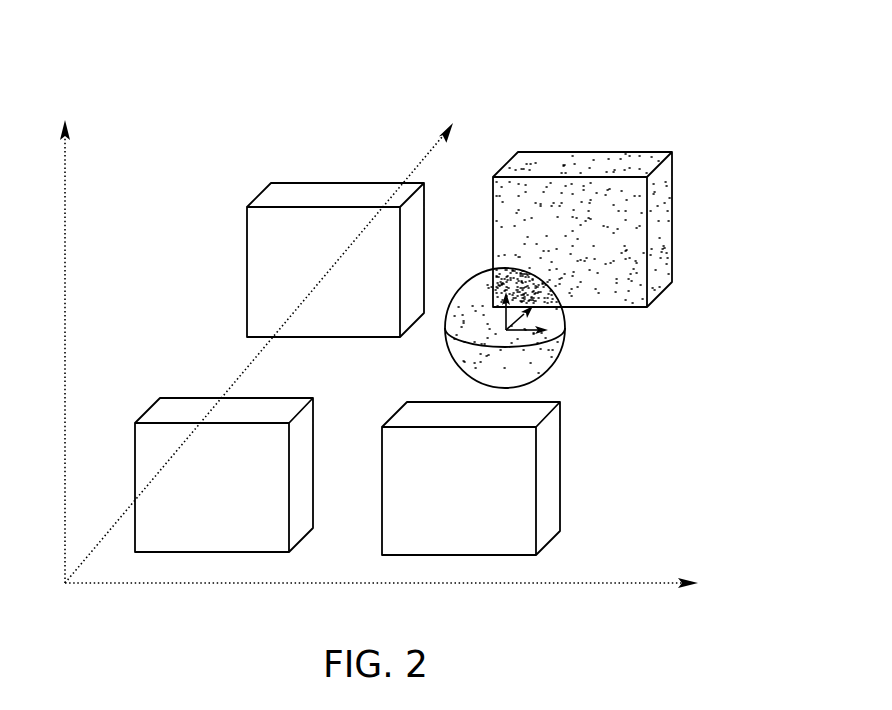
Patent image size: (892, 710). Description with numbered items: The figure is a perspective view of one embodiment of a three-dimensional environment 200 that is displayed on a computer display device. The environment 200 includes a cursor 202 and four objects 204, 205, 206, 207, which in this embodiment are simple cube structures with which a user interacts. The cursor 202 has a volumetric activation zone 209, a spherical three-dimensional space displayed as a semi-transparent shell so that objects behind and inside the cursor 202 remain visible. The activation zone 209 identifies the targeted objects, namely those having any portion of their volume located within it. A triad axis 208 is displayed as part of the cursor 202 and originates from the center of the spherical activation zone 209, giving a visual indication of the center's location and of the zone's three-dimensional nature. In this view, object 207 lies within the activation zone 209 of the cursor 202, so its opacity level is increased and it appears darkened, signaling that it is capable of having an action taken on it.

The 3D environment 200 is at (650, 73).
The cursor 202 is at (587, 325).
The object 204 is at (168, 398).
The object 205 is at (324, 183).
The object 206 is at (560, 489).
The object 207 is at (569, 152).
The triad axis 208 is at (505, 328).
The volumetric activation zone 209 is at (563, 342).